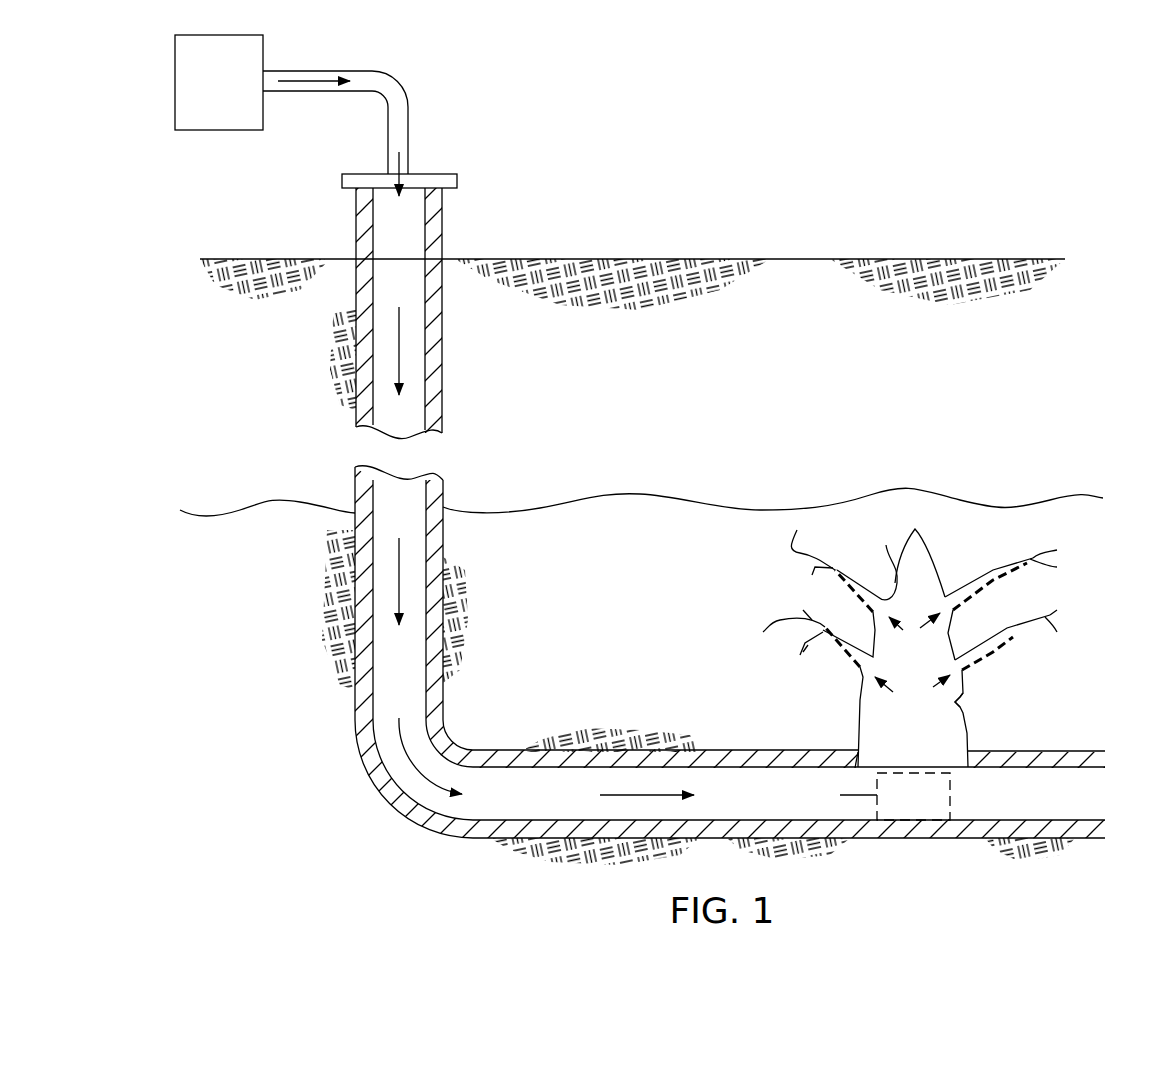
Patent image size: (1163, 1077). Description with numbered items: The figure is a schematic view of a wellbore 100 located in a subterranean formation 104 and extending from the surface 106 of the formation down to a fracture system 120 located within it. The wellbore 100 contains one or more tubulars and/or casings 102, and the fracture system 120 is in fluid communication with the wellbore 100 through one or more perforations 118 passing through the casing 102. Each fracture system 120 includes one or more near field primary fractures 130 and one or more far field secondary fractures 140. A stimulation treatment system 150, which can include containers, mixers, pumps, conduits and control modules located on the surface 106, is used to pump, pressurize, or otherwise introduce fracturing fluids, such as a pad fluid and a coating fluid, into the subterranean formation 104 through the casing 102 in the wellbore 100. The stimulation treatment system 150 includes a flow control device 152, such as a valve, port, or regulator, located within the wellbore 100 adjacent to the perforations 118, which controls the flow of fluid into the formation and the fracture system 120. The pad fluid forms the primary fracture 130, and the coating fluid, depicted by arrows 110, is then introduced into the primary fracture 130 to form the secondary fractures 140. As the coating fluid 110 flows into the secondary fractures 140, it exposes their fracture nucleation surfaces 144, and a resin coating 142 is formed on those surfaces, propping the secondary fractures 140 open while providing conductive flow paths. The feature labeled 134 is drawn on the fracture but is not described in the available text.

The wellbore 100 is at (415, 333).
The casing 102 is at (433, 370).
The subterranean formation 104 is at (640, 618).
The surface 106 is at (711, 257).
The coating fluid 110 is at (317, 83).
The perforation 118 is at (850, 759).
The fracture system 120 is at (912, 636).
The near field primary fracture 130 is at (953, 733).
The fracture wall 134 is at (955, 700).
The far field secondary fracture 140 is at (857, 583).
The resin coating 142 is at (840, 582).
The fracture nucleation surface 144 is at (886, 545).
The stimulation treatment system 150 is at (204, 92).
The flow control device 152 is at (943, 822).